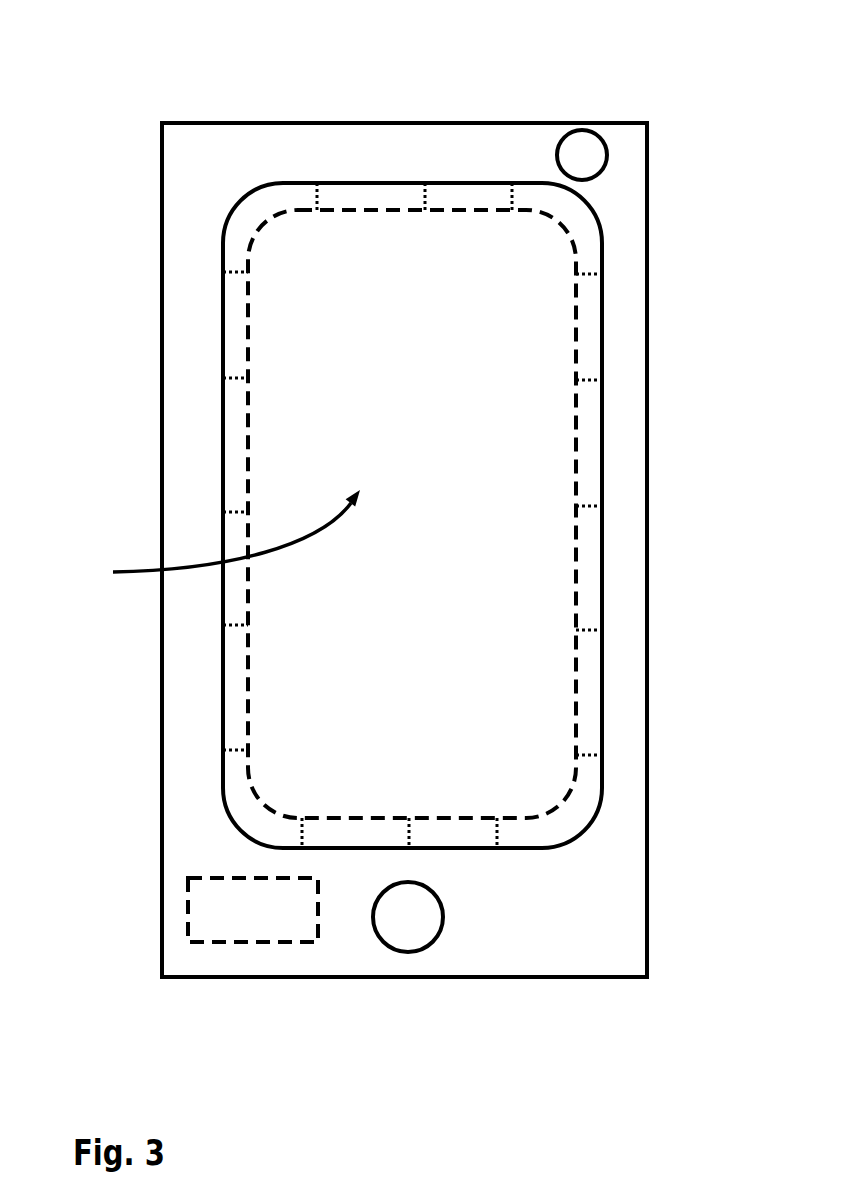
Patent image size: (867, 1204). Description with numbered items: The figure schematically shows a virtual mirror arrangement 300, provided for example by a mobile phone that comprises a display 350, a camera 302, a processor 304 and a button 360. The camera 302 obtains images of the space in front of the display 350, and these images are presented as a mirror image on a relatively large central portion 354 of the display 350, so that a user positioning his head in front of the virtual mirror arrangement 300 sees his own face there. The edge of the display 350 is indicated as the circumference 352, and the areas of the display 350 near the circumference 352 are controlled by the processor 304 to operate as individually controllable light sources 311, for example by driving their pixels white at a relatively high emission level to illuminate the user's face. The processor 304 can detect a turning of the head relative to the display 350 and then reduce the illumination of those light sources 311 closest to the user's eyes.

The virtual mirror arrangement 300 is at (102, 76).
The camera 302 is at (588, 147).
The processor 304 is at (230, 943).
The individually controllable light sources 311 is at (321, 831).
The display 350 is at (223, 337).
The circumference 352 is at (208, 436).
The central portion 354 is at (209, 540).
The button 360 is at (402, 928).